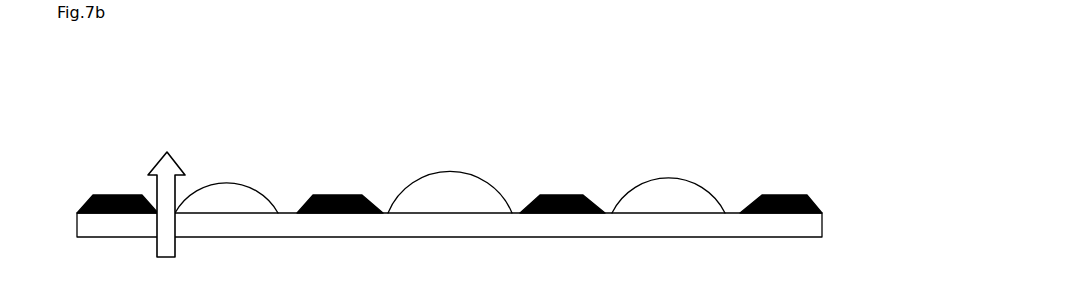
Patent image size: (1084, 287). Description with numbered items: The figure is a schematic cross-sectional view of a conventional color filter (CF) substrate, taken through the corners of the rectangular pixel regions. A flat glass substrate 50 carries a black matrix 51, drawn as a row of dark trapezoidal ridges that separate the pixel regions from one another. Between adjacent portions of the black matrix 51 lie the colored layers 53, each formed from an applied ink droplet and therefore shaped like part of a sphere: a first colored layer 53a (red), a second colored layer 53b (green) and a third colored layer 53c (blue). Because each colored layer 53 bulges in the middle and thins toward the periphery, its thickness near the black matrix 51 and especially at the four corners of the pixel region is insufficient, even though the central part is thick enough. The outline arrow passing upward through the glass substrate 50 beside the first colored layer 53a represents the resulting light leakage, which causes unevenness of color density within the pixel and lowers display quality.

The glass substrate 50 is at (807, 227).
The black matrix 51 is at (807, 197).
The colored layer 53 is at (717, 112).
The first colored layer 53a is at (223, 193).
The second colored layer 53b is at (442, 193).
The third colored layer 53c is at (667, 193).